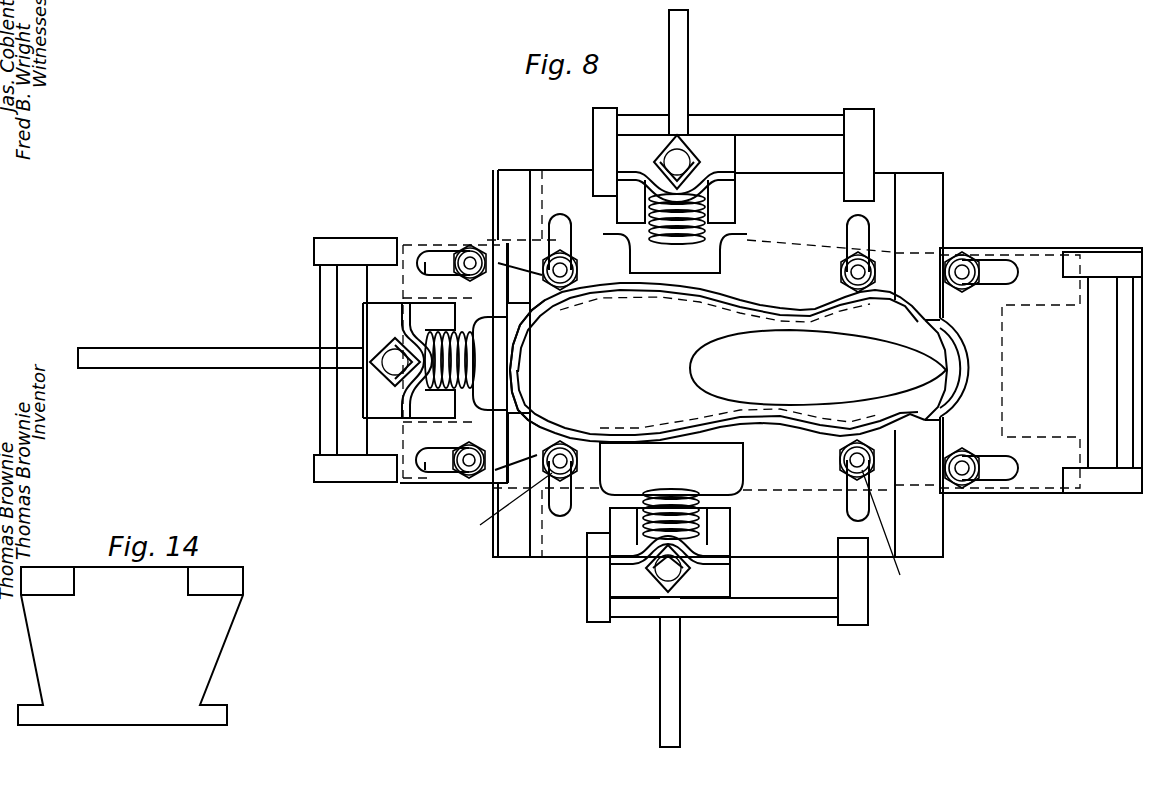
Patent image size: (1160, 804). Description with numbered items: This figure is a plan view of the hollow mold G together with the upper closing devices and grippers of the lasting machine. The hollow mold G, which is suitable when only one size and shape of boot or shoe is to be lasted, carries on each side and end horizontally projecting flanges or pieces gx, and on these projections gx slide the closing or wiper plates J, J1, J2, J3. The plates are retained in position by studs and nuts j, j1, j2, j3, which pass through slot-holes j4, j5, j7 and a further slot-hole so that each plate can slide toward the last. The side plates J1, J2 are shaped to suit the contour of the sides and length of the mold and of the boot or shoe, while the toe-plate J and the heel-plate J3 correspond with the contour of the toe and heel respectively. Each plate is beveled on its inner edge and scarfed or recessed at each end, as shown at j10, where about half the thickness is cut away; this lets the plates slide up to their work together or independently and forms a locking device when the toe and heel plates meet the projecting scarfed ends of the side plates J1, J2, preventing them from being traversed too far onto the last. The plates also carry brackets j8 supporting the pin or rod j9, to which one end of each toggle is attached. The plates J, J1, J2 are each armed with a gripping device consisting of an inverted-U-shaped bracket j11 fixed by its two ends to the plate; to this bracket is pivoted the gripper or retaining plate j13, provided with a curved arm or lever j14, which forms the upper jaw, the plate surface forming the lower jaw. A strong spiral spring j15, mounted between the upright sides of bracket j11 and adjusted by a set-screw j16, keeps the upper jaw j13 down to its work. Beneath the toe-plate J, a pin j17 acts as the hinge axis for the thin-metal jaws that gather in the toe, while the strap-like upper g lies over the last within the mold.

In FIG. 8, the curved arm or lever j14 is at (688, 50).
In FIG. 8, the bracket j8 is at (593, 133).
In FIG. 8, the pin or rod j9 is at (745, 115).
In FIG. 8, the inverted-U-shaped frame or bracket j11 is at (700, 575).
In FIG. 8, the set-screw j16 is at (692, 164).
In FIG. 8, the gripper or retaining plate j13 is at (565, 366).
In FIG. 8, the spiral spring j15 is at (650, 243).
In FIG. 8, the stud and nut j1 is at (640, 250).
In FIG. 8, the slot-hole j5 is at (560, 218).
In FIG. 8, the stud and nut j3 is at (964, 258).
In FIG. 8, the slot-hole j7 is at (995, 262).
In FIG. 8, the slot-hole j4 is at (468, 247).
In FIG. 8, the stud and nut j is at (475, 233).
In FIG. 8, the scarfed or recessed end j10 is at (500, 215).
In FIG. 8, the stud and nut j2 is at (672, 535).
In FIG. 8, the flange or projecting piece gx is at (892, 173).
In FIG. 14, the flange or projecting piece gx is at (66, 598).
In FIG. 8, the hollow mold G is at (732, 362).
In FIG. 14, the hollow mold G is at (130, 646).
In FIG. 8, the strap g is at (622, 296).
In FIG. 8, the pin j17 is at (518, 342).
In FIG. 8, the toe closing or wiper plate J is at (453, 363).
In FIG. 8, the side closing or wiper plate J1 is at (789, 225).
In FIG. 8, the side closing or wiper plate J2 is at (715, 363).
In FIG. 8, the heel closing or wiper plate J3 is at (1033, 370).